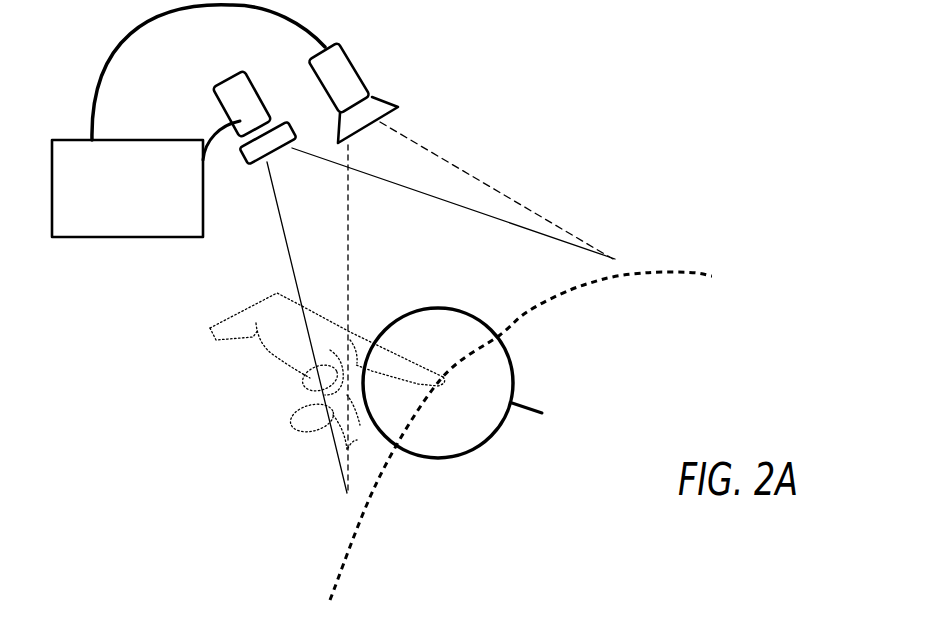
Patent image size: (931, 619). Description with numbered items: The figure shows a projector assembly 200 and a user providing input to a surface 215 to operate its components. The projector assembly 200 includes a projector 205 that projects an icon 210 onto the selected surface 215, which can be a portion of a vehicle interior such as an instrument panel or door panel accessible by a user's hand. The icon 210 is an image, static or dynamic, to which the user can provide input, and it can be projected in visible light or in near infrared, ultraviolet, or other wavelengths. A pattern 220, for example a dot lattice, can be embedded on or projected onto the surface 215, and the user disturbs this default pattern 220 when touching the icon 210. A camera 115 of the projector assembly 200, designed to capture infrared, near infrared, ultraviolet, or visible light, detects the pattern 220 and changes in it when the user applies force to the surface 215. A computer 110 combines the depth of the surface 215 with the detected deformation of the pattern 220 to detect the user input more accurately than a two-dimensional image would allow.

The projector assembly 200 is at (652, 88).
The computer 110 is at (78, 238).
The camera 115 is at (212, 107).
The projector 205 is at (355, 52).
The icon 210 is at (453, 163).
The surface 215 is at (543, 305).
The pattern 220 is at (448, 376).